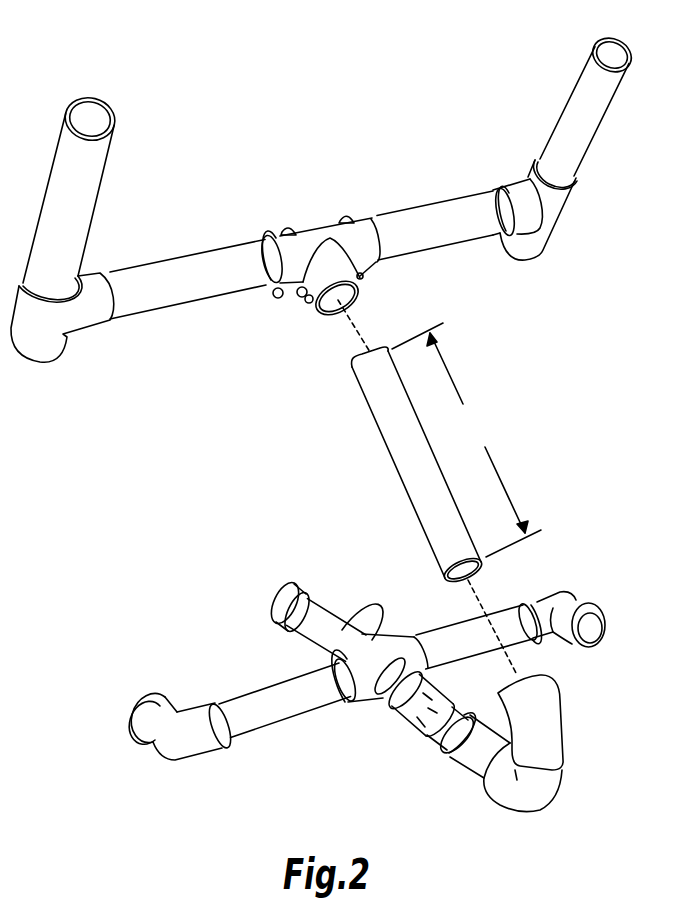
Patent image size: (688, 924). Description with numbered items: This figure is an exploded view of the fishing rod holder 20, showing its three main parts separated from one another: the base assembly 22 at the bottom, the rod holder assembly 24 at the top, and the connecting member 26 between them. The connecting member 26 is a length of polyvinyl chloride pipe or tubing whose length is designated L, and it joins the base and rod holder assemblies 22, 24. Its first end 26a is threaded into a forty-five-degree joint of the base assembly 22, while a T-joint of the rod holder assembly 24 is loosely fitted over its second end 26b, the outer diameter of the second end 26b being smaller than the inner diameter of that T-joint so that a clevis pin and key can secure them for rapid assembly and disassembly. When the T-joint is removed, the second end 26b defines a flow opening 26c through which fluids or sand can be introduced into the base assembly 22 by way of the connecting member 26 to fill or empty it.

The fishing rod holder 20 is at (324, 414).
The base assembly 22 is at (250, 578).
The rod holder assembly 24 is at (323, 250).
The connecting member 26 is at (416, 466).
The first end of the connecting member 26a is at (480, 577).
The second end of the connecting member 26b is at (357, 362).
The flow opening 26c is at (374, 345).